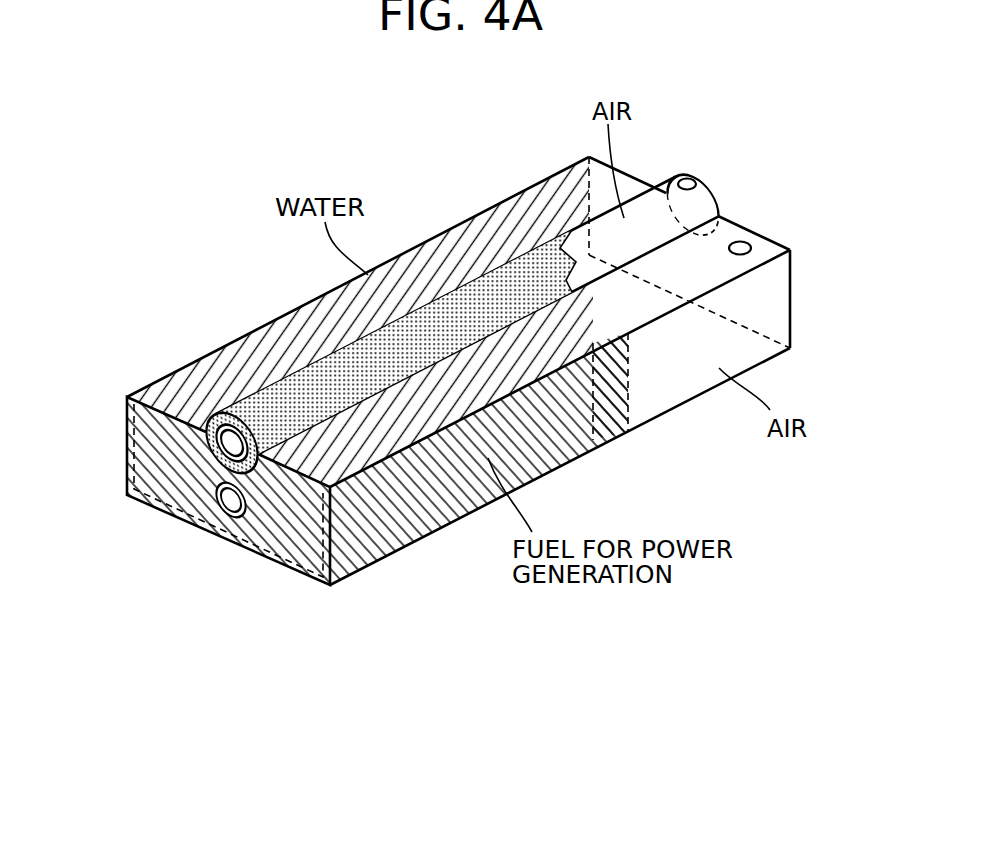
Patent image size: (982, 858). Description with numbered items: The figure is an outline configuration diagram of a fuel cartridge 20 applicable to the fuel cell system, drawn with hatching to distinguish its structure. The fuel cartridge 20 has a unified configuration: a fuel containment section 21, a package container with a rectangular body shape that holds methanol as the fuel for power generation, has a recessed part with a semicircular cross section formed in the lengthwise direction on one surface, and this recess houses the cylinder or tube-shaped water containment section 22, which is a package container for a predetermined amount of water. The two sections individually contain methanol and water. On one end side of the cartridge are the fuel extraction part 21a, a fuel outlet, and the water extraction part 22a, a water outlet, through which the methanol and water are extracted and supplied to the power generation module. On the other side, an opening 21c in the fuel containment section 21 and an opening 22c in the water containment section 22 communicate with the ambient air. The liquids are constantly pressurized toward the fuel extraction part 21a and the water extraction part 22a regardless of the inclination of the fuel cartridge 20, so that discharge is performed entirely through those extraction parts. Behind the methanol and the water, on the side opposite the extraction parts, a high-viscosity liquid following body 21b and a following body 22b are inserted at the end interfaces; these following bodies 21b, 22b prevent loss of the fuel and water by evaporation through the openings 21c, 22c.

The fuel cartridge 20 is at (160, 258).
The fuel containment section 21 is at (408, 552).
The fuel extraction part 21a is at (228, 516).
The following body 21b is at (614, 438).
The opening 21c is at (745, 245).
The water containment section 22 is at (300, 318).
The water extraction part 22a is at (210, 418).
The following body 22b is at (560, 243).
The opening 22c is at (690, 178).